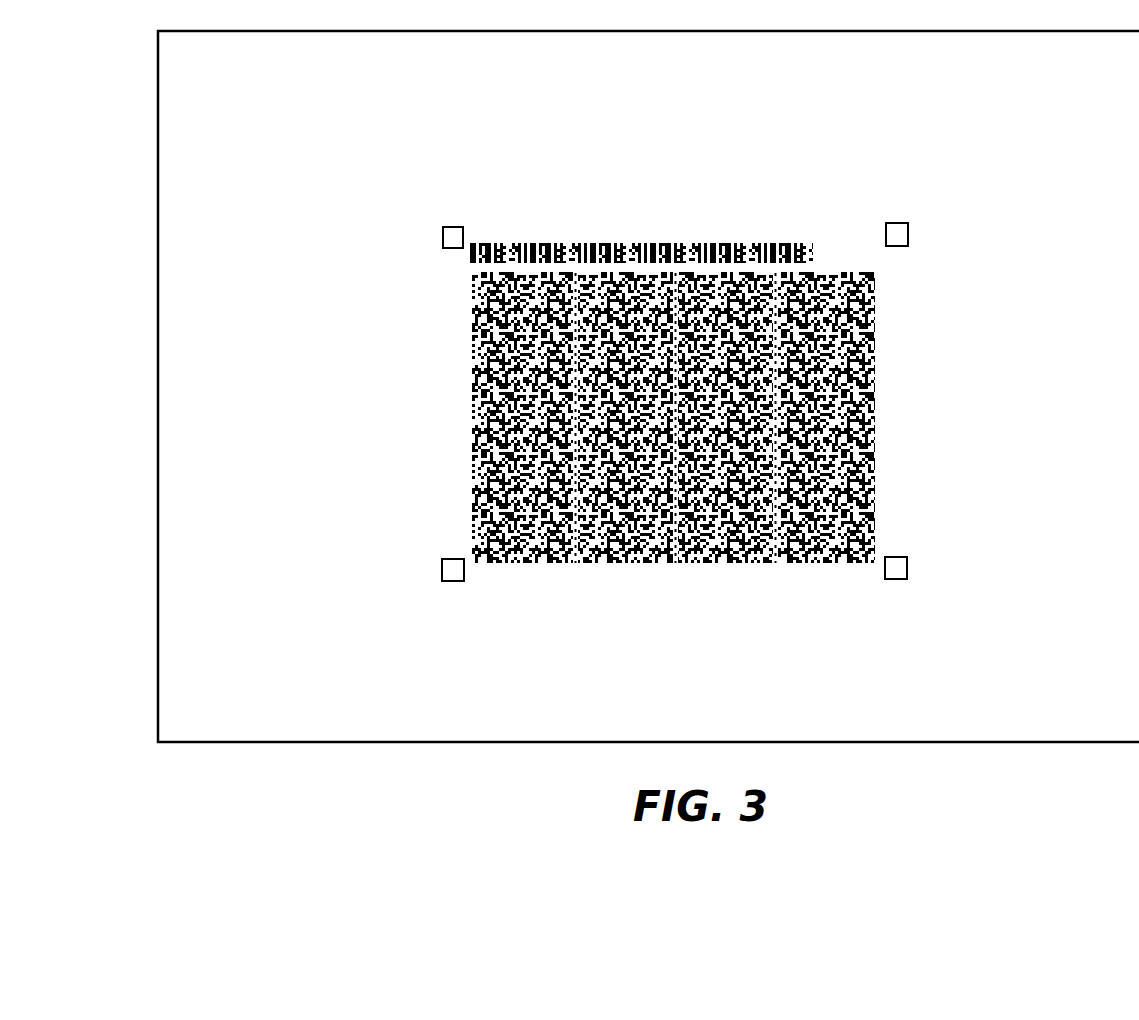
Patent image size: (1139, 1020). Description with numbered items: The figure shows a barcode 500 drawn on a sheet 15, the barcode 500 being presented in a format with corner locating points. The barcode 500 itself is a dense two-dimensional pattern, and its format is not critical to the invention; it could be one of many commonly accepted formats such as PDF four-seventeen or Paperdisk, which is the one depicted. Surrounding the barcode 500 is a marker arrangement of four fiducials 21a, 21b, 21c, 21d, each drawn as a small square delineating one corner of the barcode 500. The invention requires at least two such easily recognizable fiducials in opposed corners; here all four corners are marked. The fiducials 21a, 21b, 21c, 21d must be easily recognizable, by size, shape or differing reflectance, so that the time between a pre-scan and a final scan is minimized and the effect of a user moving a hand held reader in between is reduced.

The document/page 15 is at (950, 744).
The barcode 500 is at (712, 280).
The fiducial 21a is at (443, 251).
The fiducial 21b is at (907, 579).
The fiducial 21c is at (442, 582).
The fiducial 21d is at (906, 246).